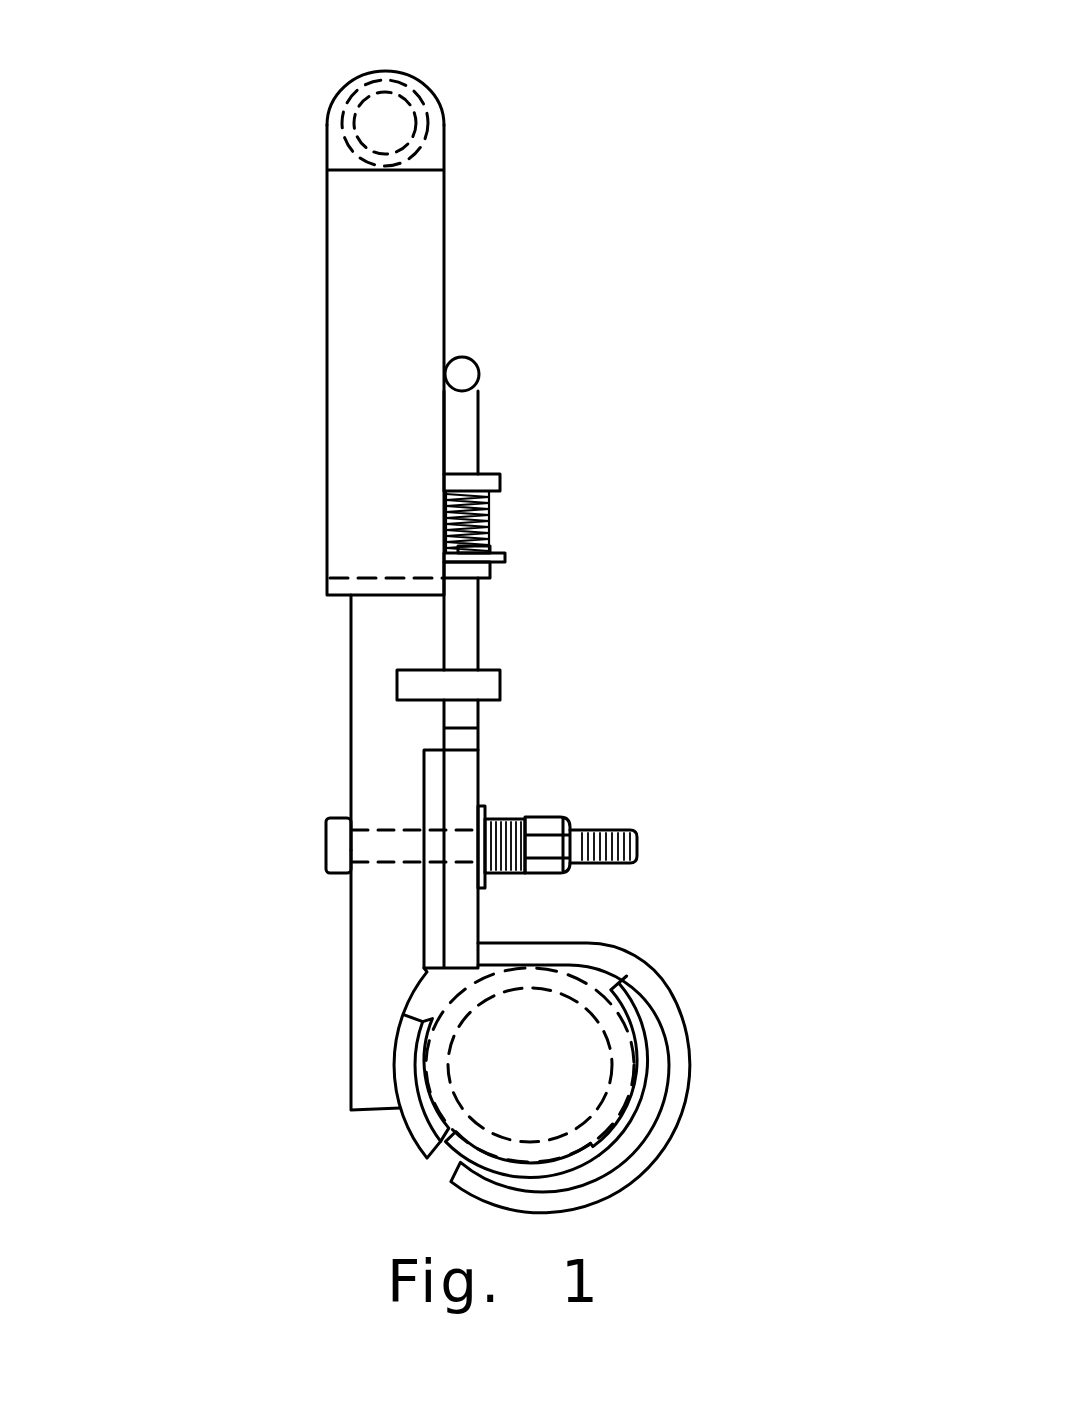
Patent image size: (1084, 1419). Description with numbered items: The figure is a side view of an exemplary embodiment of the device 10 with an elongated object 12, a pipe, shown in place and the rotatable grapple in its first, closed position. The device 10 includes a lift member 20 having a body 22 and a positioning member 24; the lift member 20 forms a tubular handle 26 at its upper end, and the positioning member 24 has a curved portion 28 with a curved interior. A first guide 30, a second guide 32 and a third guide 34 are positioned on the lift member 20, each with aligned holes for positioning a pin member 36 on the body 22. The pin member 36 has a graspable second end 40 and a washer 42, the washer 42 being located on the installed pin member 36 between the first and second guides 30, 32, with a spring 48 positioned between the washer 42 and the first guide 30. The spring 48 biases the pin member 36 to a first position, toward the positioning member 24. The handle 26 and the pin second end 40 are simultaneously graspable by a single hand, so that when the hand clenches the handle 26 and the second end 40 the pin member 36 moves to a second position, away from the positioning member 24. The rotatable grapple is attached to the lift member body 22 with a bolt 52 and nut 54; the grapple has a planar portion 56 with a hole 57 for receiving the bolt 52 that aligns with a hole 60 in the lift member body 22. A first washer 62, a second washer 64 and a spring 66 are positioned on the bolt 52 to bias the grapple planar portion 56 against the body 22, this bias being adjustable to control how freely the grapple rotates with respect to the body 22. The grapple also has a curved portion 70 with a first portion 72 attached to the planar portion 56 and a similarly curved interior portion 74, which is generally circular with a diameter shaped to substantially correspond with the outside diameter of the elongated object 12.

The device 10 is at (262, 112).
The elongated object 12 is at (595, 1150).
The lift member 20 is at (508, 197).
The body 22 is at (350, 682).
The positioning member 24 is at (351, 1052).
The tubular handle 26 is at (416, 78).
The curved portion 28 is at (410, 1128).
The first guide 30 is at (485, 473).
The second guide 32 is at (490, 568).
The third guide 34 is at (502, 679).
The pin member 36 is at (480, 627).
The graspable second end 40 is at (470, 353).
The washer 42 is at (496, 551).
The spring 48 is at (497, 495).
The bolt 52 is at (328, 832).
The nut 54 is at (558, 815).
The planar portion 56 is at (478, 763).
The hole 57 is at (467, 863).
The hole 60 is at (385, 863).
The first washer 62 is at (480, 813).
The second washer 64 is at (526, 873).
The spring 66 is at (490, 817).
The curved portion 70 is at (738, 1062).
The first portion 72 is at (673, 1132).
The interior portion 74 is at (450, 1162).